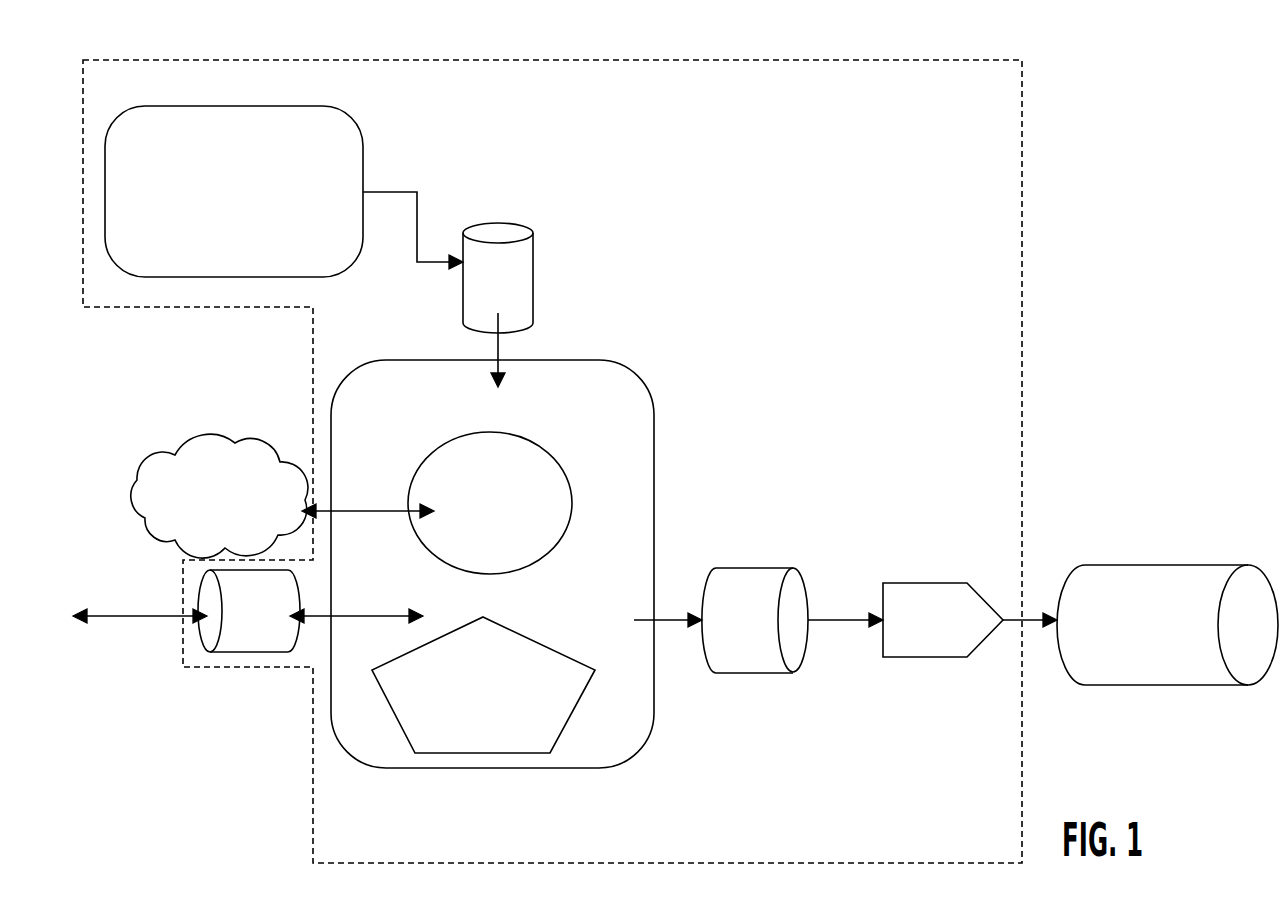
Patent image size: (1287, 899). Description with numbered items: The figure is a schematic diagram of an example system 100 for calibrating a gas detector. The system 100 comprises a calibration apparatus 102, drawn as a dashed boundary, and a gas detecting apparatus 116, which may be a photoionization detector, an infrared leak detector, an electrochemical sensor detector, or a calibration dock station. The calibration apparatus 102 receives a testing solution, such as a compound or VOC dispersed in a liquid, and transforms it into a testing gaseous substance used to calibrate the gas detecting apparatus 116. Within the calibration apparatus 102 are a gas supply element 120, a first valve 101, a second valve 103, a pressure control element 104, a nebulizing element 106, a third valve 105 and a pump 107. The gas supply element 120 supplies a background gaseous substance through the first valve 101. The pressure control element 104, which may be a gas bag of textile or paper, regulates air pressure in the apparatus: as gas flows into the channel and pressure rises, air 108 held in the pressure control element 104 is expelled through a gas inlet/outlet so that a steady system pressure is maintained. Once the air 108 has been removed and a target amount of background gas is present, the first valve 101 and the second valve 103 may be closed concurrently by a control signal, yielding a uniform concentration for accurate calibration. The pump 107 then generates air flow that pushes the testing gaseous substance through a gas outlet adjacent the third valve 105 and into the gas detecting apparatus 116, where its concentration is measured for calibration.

The system 100 is at (1067, 118).
The first valve 101 is at (493, 230).
The calibration apparatus 102 is at (657, 60).
The second valve 103 is at (235, 652).
The pressure control element 104 is at (515, 455).
The third valve 105 is at (754, 665).
The nebulizing element 106 is at (427, 752).
The pump 107 is at (938, 592).
The air 108 is at (235, 508).
The gas detecting apparatus 116 is at (1164, 632).
The gas supply element 120 is at (240, 206).